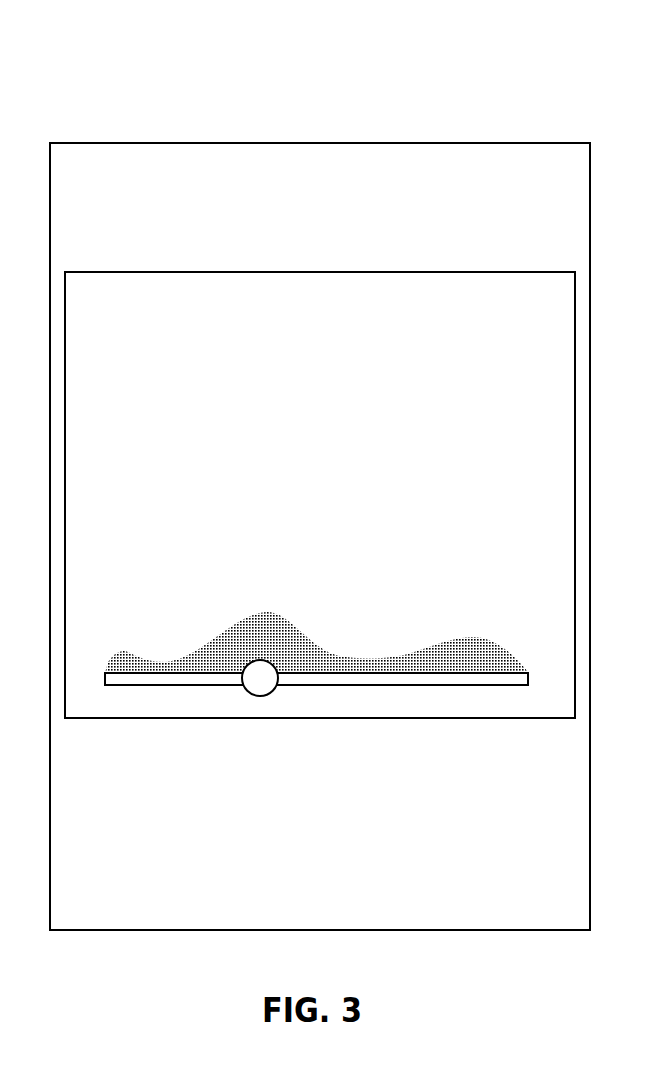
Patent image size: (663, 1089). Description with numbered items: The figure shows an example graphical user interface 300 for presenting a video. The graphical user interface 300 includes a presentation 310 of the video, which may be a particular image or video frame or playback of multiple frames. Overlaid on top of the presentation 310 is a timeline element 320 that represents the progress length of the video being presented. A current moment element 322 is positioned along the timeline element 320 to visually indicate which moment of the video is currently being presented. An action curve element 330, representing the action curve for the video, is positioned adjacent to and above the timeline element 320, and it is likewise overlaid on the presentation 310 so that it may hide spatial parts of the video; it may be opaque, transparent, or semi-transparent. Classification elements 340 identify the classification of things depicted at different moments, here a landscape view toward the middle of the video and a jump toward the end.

The graphical user interface 300 is at (373, 143).
The presentation 310 is at (320, 495).
The timeline element 320 is at (332, 685).
The current moment element 322 is at (258, 696).
The action curve element 330 is at (135, 657).
The classification elements 340 is at (315, 565).